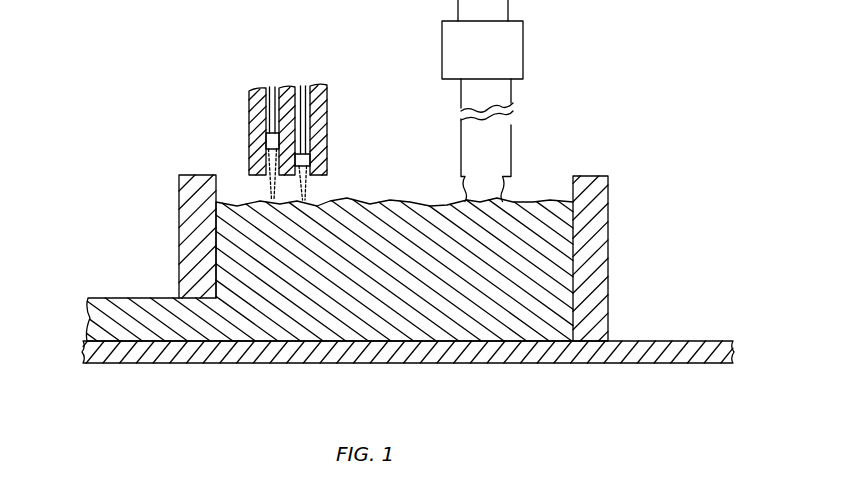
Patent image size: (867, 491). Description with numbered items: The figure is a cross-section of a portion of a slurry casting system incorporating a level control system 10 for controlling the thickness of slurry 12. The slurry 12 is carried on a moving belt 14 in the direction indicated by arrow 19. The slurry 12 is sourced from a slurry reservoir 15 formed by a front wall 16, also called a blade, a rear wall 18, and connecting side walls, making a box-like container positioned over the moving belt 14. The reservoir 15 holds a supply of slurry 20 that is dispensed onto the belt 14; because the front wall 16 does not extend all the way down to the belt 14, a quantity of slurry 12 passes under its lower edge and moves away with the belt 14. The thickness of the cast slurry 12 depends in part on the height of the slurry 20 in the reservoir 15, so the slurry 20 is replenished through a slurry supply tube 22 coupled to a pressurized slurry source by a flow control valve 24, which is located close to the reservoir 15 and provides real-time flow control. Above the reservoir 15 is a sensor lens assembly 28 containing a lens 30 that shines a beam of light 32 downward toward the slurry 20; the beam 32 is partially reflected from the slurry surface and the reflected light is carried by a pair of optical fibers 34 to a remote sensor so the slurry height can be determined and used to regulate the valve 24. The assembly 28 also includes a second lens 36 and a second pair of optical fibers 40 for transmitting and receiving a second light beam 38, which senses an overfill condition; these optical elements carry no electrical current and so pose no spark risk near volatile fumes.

The level control system 10 is at (396, 68).
The slurry 12 is at (123, 302).
The moving belt 14 is at (84, 349).
The slurry reservoir 15 is at (553, 191).
The front wall 16 is at (186, 218).
The rear wall 18 is at (605, 247).
The arrow 19 is at (316, 383).
The supply of slurry 20 is at (386, 202).
The slurry supply tube 22 is at (502, 103).
The flow control valve 24 is at (516, 52).
The sensor lens assembly 28 is at (322, 113).
The lens 30 is at (309, 158).
The beam of light 32 is at (305, 195).
The pair of optical fibers 34 is at (302, 86).
The second lens 36 is at (268, 141).
The second light beam 38 is at (267, 189).
The second pair of optical fibers 40 is at (272, 87).